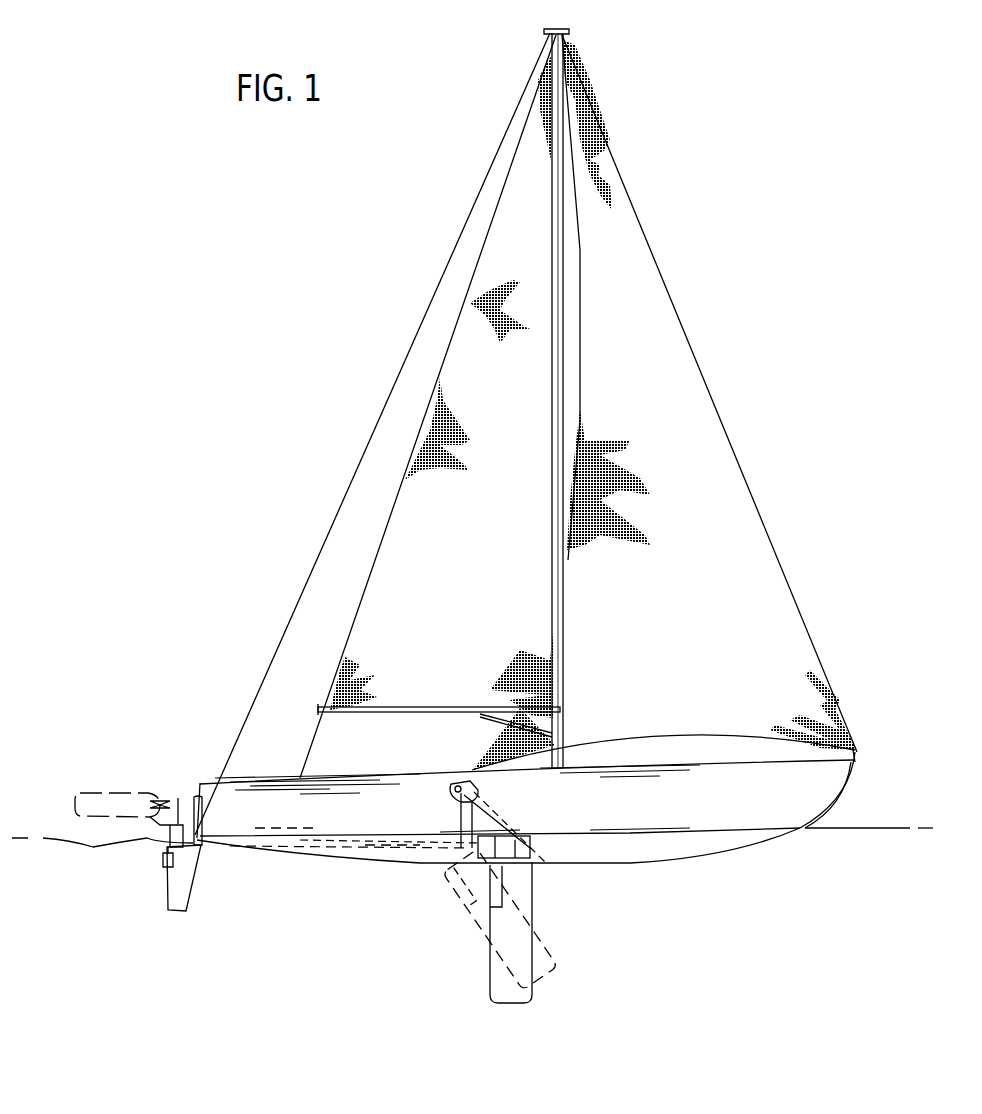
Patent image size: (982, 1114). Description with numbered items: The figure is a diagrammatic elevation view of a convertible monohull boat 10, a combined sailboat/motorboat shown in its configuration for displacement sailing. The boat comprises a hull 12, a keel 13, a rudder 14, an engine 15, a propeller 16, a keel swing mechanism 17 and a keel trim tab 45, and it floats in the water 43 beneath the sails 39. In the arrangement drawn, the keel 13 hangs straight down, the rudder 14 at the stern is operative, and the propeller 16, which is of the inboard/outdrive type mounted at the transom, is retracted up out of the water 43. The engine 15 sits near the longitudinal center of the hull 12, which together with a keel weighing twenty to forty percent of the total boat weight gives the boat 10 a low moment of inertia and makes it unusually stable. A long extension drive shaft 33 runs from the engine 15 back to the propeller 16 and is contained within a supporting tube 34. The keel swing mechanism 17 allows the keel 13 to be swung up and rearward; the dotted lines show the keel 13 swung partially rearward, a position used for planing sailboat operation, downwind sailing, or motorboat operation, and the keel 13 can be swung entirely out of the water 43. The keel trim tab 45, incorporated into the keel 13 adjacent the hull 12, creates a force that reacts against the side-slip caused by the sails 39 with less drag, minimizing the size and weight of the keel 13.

The convertible monohull boat 10 is at (823, 493).
The hull 12 is at (762, 848).
The keel 13 is at (533, 977).
The rudder 14 is at (167, 878).
The engine 15 is at (533, 850).
The propeller 16 is at (163, 797).
The keel swing mechanism 17 is at (457, 787).
The drive shaft 33 is at (380, 845).
The tube 34 is at (283, 828).
The sails 39 is at (727, 432).
The water 43 is at (877, 829).
The keel trim tab 45 is at (487, 902).